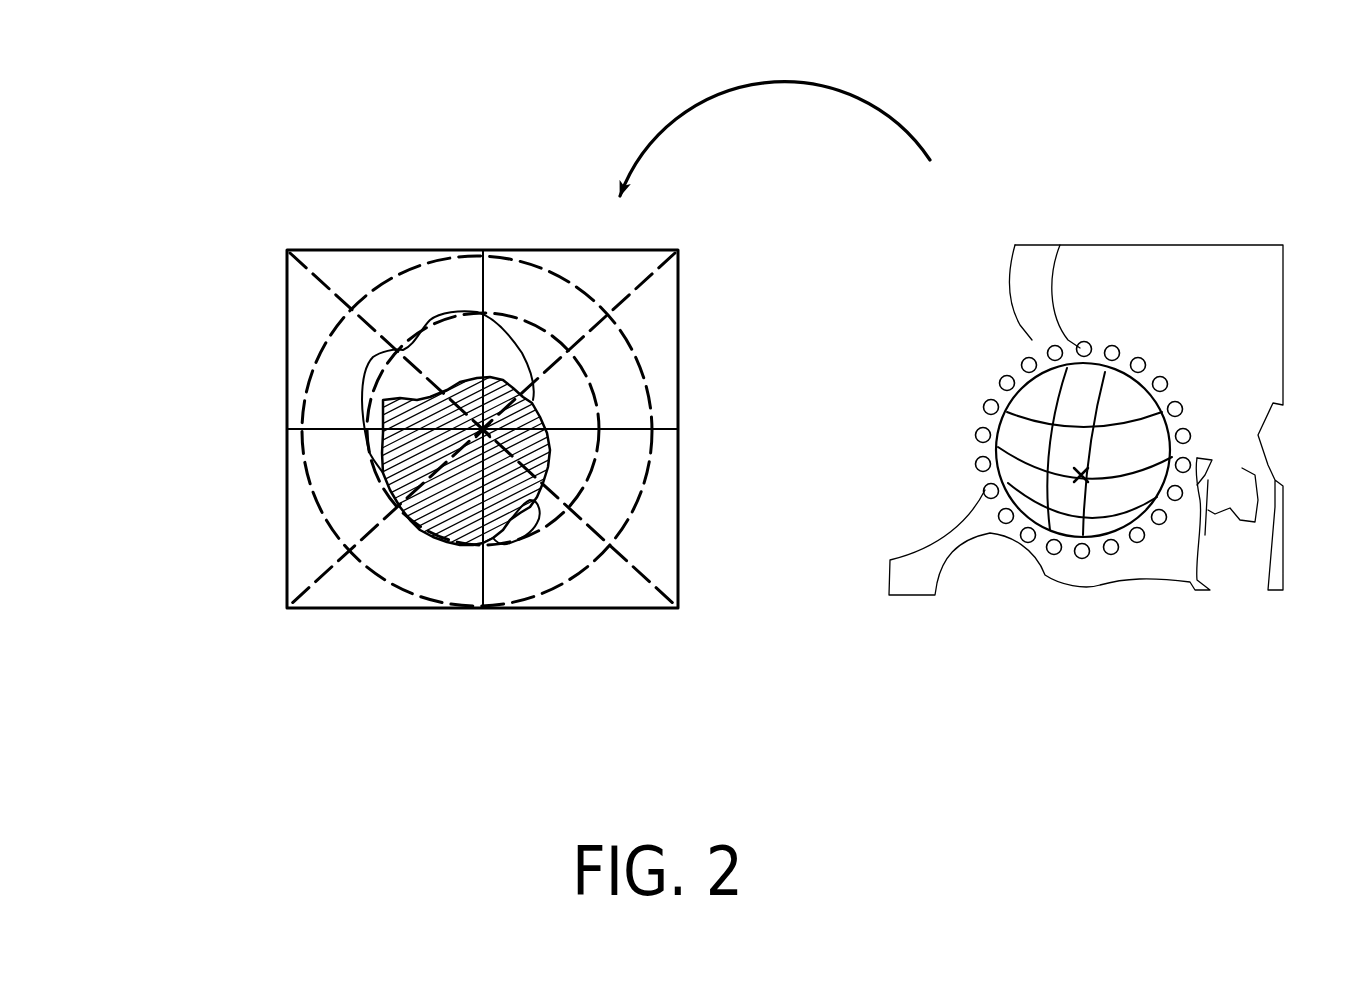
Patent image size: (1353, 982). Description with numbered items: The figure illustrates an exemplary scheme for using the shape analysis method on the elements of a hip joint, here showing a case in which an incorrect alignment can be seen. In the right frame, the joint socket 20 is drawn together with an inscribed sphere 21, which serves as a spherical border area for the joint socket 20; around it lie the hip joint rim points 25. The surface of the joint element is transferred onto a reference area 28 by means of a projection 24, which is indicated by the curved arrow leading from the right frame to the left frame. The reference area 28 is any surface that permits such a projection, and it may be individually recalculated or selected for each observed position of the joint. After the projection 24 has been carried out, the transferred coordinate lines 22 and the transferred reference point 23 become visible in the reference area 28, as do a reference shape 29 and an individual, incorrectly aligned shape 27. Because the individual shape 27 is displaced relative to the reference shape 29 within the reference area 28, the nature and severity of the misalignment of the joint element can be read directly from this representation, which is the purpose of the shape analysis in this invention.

The joint socket 20 is at (984, 390).
The inscribed sphere 21 is at (1084, 360).
The transferred coordinate lines 22 is at (652, 505).
The transferred reference point 23 is at (495, 422).
The projection 24 is at (775, 118).
The hip joint rim points 25 is at (1190, 440).
The individual, incorrectly aligned shape 27 is at (460, 514).
The reference area 28 is at (334, 244).
The reference shape 29 is at (372, 412).